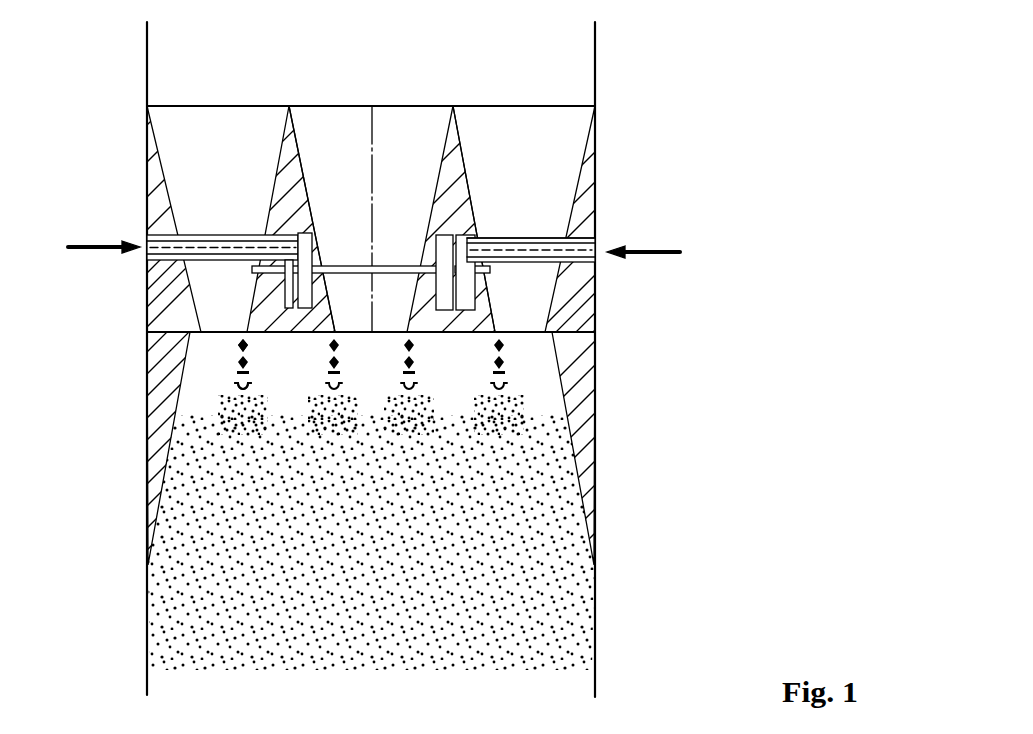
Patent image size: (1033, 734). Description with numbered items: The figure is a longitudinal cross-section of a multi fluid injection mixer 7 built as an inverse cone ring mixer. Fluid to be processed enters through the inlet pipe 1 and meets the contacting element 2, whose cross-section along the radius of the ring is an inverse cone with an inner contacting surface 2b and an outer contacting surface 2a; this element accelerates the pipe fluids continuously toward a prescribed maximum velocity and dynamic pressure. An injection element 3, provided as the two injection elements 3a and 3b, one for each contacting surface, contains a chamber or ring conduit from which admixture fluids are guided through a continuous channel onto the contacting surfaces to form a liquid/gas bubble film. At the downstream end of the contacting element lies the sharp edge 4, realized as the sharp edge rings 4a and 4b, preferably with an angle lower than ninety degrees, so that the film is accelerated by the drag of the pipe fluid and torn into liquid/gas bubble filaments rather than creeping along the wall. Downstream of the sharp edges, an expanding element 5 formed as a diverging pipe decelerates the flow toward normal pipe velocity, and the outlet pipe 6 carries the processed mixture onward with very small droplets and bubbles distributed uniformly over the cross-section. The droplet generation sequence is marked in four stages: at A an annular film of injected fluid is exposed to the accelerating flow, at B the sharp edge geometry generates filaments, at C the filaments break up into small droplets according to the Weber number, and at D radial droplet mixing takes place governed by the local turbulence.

The inlet pipe 1 is at (598, 62).
The contacting element 2 is at (283, 173).
The outer contacting surface 2a is at (478, 205).
The inner contacting surface 2b is at (300, 207).
The injection element 3 is at (503, 253).
The injection element 3a is at (545, 237).
The injection element 3b is at (195, 237).
The sharp edge 4 is at (371, 362).
The sharp edge ring 4a is at (497, 332).
The sharp edge ring 4b is at (325, 328).
The expanding element 5 is at (575, 423).
The outlet pipe 6 is at (598, 662).
The multi fluid injection mixer 7 is at (635, 542).
The first droplet generation stage A is at (242, 295).
The second droplet generation stage B is at (233, 338).
The third droplet generation stage C is at (230, 385).
The fourth droplet generation stage D is at (228, 450).